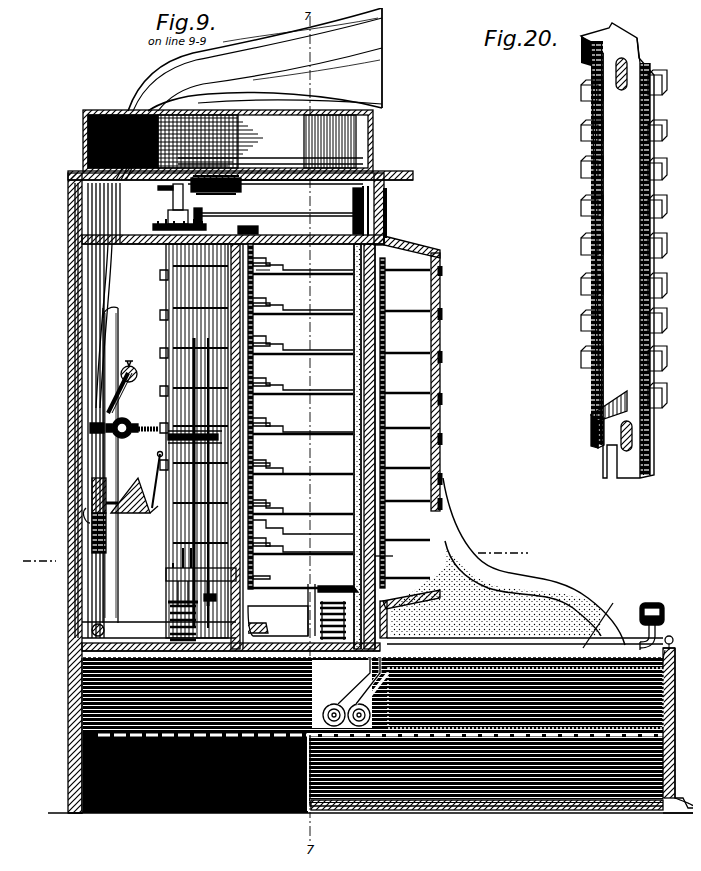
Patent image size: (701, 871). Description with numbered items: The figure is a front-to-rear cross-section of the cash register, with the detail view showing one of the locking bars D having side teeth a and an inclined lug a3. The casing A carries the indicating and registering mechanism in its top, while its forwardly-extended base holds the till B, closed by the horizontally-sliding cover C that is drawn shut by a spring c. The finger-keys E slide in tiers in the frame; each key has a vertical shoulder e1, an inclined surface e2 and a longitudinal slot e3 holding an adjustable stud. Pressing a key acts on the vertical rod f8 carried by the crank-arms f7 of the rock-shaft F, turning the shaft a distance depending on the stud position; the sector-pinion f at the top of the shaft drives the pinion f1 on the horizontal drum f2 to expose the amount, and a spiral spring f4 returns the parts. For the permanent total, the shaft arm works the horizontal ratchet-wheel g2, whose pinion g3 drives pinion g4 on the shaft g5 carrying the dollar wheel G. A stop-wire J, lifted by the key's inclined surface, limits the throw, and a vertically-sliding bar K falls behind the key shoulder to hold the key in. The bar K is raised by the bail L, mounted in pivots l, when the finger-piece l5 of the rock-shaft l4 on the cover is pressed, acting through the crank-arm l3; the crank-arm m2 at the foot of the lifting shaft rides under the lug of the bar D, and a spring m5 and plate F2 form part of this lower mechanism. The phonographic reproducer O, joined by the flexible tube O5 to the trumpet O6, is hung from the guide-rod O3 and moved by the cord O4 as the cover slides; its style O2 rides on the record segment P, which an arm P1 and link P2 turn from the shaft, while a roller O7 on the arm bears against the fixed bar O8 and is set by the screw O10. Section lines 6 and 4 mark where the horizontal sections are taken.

In FIG. 9, the casing A is at (68, 410).
In FIG. 9, the section line 6- 6 is at (60, 180).
In FIG. 9, the section line 4- 4 is at (272, 557).
In FIG. 9, the horizontal drum f2 is at (355, 138).
In FIG. 9, the trumpet O6 is at (255, 59).
In FIG. 9, the sector-pinion f is at (162, 178).
In FIG. 9, the vertical rock-shaft F is at (176, 191).
In FIG. 9, the pinion f1 is at (233, 177).
In FIG. 9, the pinion g3 is at (152, 216).
In FIG. 9, the pinion g4 is at (195, 210).
In FIG. 9, the shaft g5 is at (268, 205).
In FIG. 9, the wheel G is at (356, 192).
In FIG. 9, the horizontal ratchet-wheel g2 is at (250, 223).
In FIG. 9, the flexible tube O5 is at (100, 258).
In FIG. 9, the stop-wire J is at (160, 288).
In FIG. 9, the horizontal guide-rod O3 is at (128, 360).
In FIG. 9, the roller O7 is at (120, 412).
In FIG. 9, the fixed horizontal bar O8 is at (142, 421).
In FIG. 9, the screw O10 is at (82, 420).
In FIG. 9, the phonographic reproducer O is at (84, 514).
In FIG. 9, the cord O4 is at (78, 500).
In FIG. 9, the pointer or style O2 is at (102, 505).
In FIG. 9, the segment P is at (130, 472).
In FIG. 9, the arm P1 is at (148, 473).
In FIG. 9, the link P2 is at (196, 428).
In FIG. 9, the vertically-sliding bar K is at (300, 437).
In FIG. 9, the finger-keys E is at (318, 306).
In FIG. 9, the vertical shoulder e1 is at (275, 260).
In FIG. 9, the inclined surface e2 is at (252, 440).
In FIG. 9, the longitudinal slot e3 is at (260, 286).
In FIG. 9, the crank-arm l3 is at (336, 577).
In FIG. 9, the gravitating bar D is at (368, 553).
In FIG. 20, the gravitating bar D is at (617, 250).
In FIG. 9, the crank-arm m2 is at (305, 590).
In FIG. 9, the spring m5 is at (312, 610).
In FIG. 9, the plate F2 is at (168, 580).
In FIG. 9, the spiral spring f4 is at (162, 604).
In FIG. 9, the crank-arms f7 is at (201, 596).
In FIG. 9, the vertical rod f8 is at (215, 592).
In FIG. 9, the pivots l is at (95, 618).
In FIG. 9, the bail L is at (231, 636).
In FIG. 9, the sliding cover C is at (528, 640).
In FIG. 9, the rock-shaft l4 is at (605, 618).
In FIG. 9, the finger-piece l5 is at (645, 595).
In FIG. 9, the spring c is at (72, 676).
In FIG. 9, the till B is at (672, 752).
In FIG. 20, the lug a is at (655, 125).
In FIG. 20, the wedge a3 is at (583, 410).